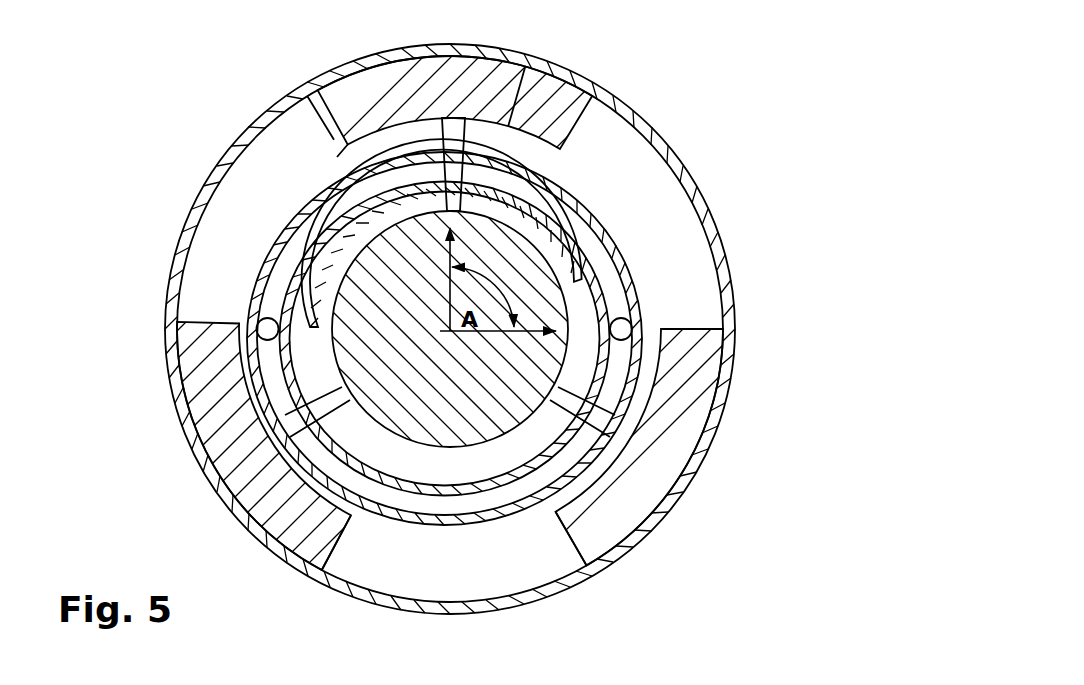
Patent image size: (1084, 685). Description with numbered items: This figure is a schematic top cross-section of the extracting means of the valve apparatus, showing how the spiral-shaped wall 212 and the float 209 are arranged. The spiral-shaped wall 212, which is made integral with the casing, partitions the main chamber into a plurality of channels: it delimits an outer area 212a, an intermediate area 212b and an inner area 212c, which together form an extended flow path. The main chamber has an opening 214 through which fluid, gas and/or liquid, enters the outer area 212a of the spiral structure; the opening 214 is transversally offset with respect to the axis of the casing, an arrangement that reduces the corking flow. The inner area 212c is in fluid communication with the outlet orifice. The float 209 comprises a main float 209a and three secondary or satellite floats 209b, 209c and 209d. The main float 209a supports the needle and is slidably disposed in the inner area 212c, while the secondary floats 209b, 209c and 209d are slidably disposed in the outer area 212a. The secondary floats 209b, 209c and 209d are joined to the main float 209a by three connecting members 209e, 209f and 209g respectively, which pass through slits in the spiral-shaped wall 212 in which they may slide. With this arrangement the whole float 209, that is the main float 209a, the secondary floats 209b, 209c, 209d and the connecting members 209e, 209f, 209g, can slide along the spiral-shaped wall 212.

The float 209 is at (550, 105).
The main float 209a is at (381, 268).
The secondary float 209b is at (293, 520).
The secondary float 209c is at (650, 472).
The secondary float 209d is at (417, 92).
The connecting member 209e is at (278, 410).
The connecting member 209f is at (606, 405).
The connecting member 209g is at (462, 136).
The spiral-shaped wall 212 is at (590, 198).
The outer area 212a is at (521, 556).
The intermediate area 212b is at (625, 358).
The inner area 212c is at (580, 293).
The opening 214 is at (227, 243).